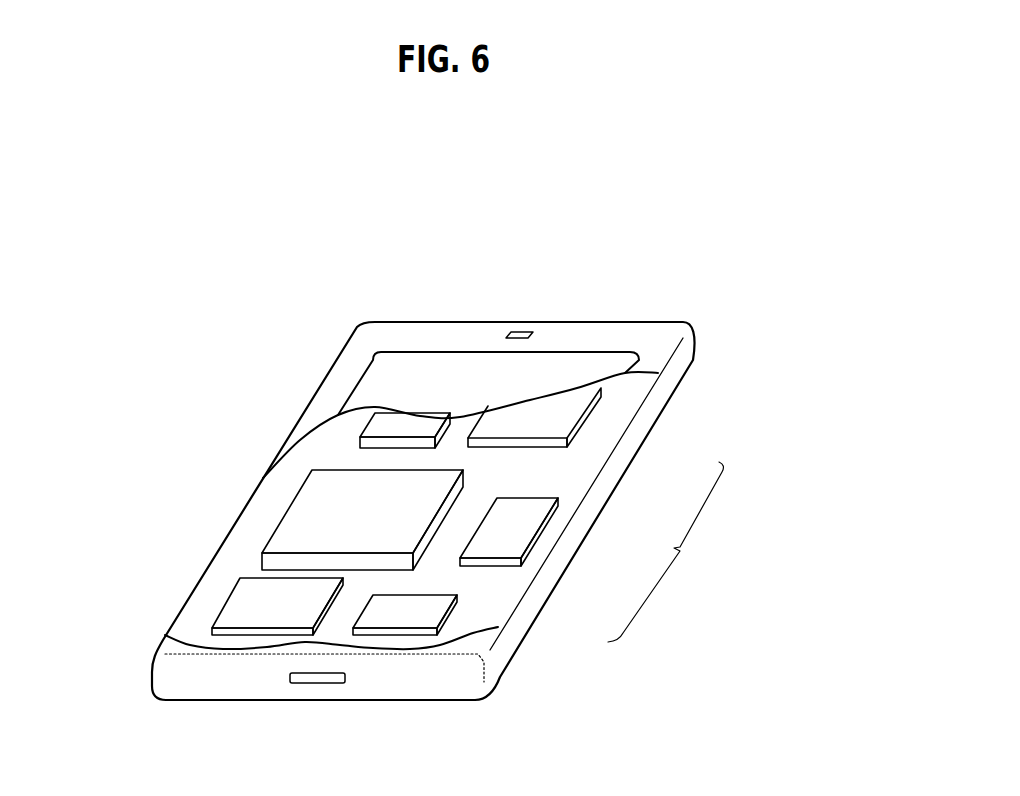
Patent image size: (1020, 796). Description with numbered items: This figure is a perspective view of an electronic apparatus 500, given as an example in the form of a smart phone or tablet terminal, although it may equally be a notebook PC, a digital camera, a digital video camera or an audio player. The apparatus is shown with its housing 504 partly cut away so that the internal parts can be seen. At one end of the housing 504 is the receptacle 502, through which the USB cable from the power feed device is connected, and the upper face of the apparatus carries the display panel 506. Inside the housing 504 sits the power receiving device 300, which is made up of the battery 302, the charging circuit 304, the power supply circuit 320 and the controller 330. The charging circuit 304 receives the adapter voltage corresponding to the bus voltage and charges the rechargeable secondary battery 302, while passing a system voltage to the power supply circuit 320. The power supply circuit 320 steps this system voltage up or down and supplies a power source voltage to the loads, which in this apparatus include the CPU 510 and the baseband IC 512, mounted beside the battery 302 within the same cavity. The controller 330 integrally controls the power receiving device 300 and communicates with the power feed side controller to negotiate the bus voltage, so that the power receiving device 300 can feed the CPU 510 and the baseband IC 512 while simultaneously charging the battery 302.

The electronic apparatus 500 is at (688, 288).
The display panel 506 is at (443, 366).
The housing 504 is at (448, 677).
The receptacle 502 is at (317, 680).
The baseband IC 512 is at (402, 423).
The CPU 510 is at (553, 417).
The battery 302 is at (297, 522).
The power supply circuit 320 is at (520, 528).
The charging circuit 304 is at (252, 598).
The controller 330 is at (437, 611).
The power receiving device 300 is at (674, 552).